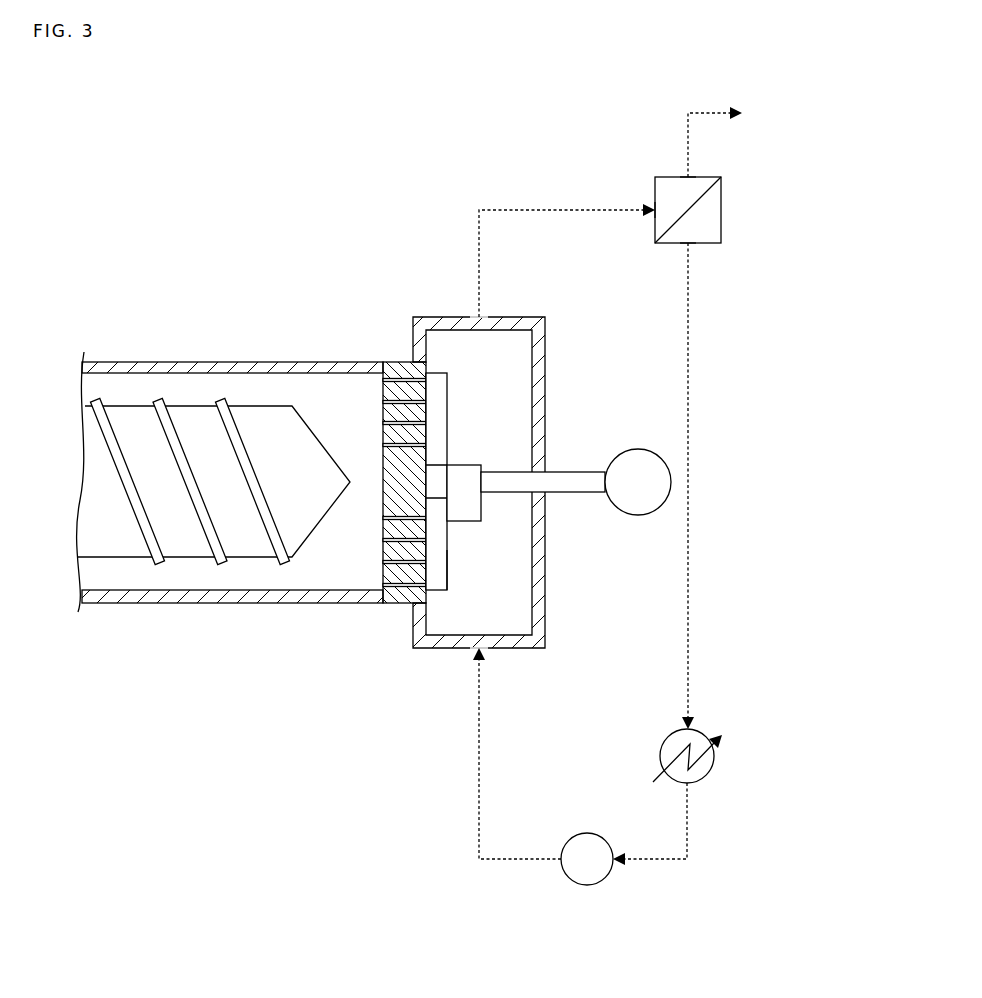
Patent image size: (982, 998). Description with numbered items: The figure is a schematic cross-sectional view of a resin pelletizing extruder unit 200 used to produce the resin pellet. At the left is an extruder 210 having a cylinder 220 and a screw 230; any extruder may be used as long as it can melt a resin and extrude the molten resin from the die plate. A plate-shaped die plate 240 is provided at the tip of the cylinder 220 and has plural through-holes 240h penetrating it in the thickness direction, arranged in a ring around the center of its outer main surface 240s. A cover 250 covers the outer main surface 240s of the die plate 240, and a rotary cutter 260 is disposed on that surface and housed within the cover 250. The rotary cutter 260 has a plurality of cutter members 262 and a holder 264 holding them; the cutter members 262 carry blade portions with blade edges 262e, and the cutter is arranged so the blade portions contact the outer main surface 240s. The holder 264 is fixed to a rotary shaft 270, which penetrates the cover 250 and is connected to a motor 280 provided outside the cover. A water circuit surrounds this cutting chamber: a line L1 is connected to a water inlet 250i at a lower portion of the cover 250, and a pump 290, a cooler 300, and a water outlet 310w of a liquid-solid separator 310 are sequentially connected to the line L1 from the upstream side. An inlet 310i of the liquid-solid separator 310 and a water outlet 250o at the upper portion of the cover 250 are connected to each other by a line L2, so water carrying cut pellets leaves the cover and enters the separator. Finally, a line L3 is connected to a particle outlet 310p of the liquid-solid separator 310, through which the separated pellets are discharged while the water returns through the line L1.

The resin pelletizing extruder unit 200 is at (368, 165).
The extruder 210 is at (249, 315).
The cylinder 220 is at (224, 362).
The screw 230 is at (174, 406).
The die plate 240 is at (398, 362).
The through-holes 240h is at (385, 376).
The outer main surface 240s is at (435, 366).
The cover 250 is at (498, 316).
The water outlet 250o is at (473, 305).
The water inlet 250i is at (486, 657).
The rotary cutter 260 is at (600, 380).
The cutter members 262 is at (440, 395).
The blade edges 262e is at (448, 562).
The holder 264 is at (470, 452).
The rotary shaft 270 is at (583, 493).
The motor 280 is at (636, 516).
The pump 290 is at (587, 833).
The cooler 300 is at (700, 782).
The liquid-solid separator 310 is at (725, 205).
The particle outlet 310p is at (717, 162).
The inlet 310i is at (652, 213).
The water outlet 310w is at (692, 250).
The line L1 is at (690, 598).
The line L2 is at (532, 208).
The line L3 is at (685, 137).